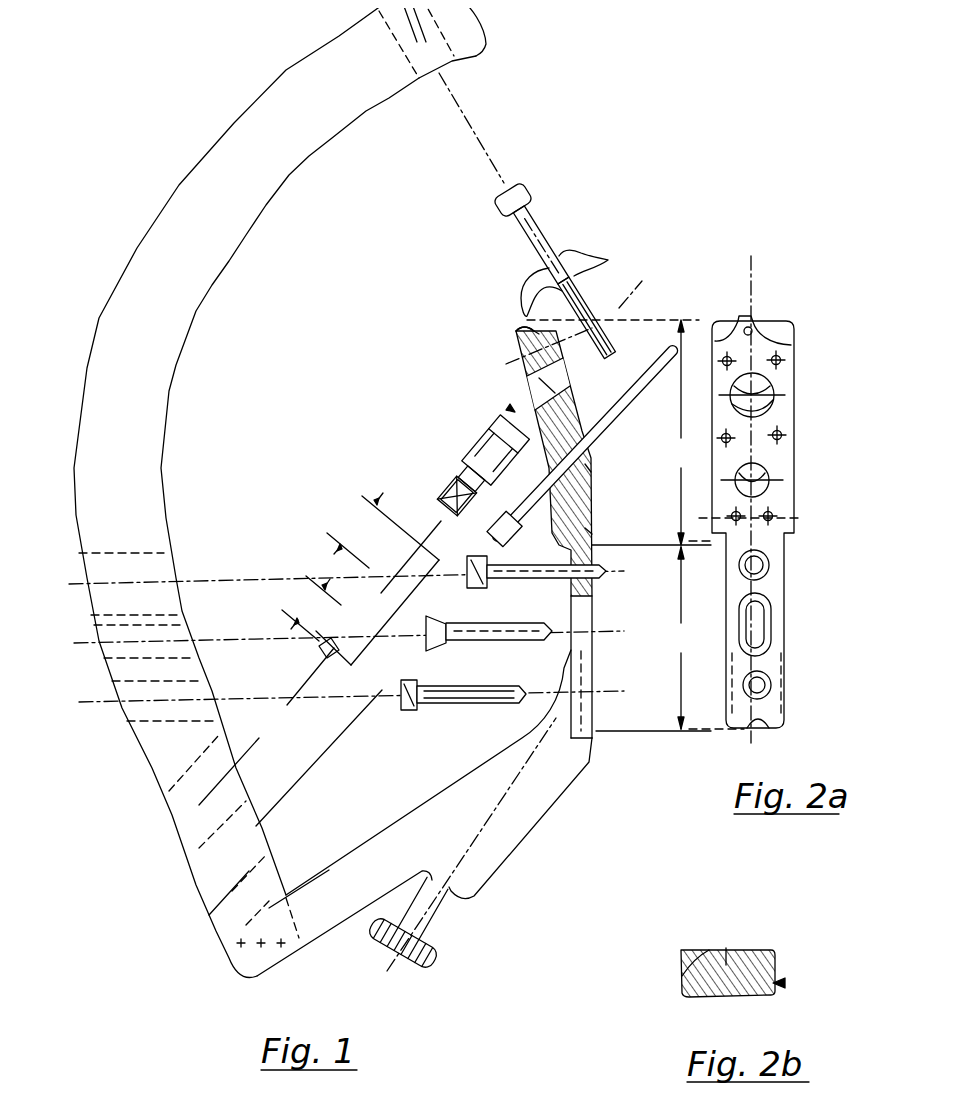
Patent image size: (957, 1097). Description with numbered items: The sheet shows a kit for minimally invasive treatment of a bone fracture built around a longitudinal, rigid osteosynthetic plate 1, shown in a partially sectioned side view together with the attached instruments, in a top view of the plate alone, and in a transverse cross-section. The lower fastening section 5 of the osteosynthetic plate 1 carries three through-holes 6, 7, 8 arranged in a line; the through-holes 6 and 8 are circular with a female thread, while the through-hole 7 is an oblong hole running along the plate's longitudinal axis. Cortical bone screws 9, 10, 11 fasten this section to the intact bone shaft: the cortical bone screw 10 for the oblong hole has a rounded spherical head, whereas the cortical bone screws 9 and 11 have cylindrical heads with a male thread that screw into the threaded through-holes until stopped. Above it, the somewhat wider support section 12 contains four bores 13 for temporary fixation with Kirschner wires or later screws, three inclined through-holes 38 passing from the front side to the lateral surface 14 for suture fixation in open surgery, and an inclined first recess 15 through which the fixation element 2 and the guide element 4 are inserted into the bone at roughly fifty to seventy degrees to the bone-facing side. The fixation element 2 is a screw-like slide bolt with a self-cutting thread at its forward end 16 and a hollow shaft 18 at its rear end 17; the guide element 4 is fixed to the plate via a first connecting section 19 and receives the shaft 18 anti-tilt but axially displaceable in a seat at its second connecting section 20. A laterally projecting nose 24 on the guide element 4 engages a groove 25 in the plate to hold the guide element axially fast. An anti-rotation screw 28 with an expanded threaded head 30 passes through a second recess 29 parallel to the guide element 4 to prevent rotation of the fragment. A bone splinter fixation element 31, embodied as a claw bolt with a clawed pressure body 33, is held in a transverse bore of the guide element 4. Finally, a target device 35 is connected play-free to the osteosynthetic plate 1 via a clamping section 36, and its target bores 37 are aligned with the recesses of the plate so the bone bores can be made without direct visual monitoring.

In FIG. 1, the osteosynthetic plate 1 is at (590, 502).
In FIG. 2A, the osteosynthetic plate 1 is at (753, 524).
In FIG. 2B, the osteosynthetic plate 1 is at (727, 950).
In FIG. 1, the fixation element 2 is at (490, 450).
In FIG. 1, the guide element 4 is at (362, 598).
In FIG. 1, the fastening section 5 is at (653, 639).
In FIG. 2A, the through-hole 6 is at (767, 564).
In FIG. 2A, the through-hole 7 is at (768, 625).
In FIG. 2A, the through-hole 8 is at (771, 684).
In FIG. 1, the cortical bone screw 9 is at (607, 575).
In FIG. 1, the cortical bone screw 10 is at (543, 652).
In FIG. 1, the cortical bone screw 11 is at (473, 700).
In FIG. 1, the support section 12 is at (619, 432).
In FIG. 2A, the bores 13 is at (781, 362).
In FIG. 2B, the lateral surface 14 is at (786, 985).
In FIG. 1, the first recess 15 is at (520, 388).
In FIG. 2A, the first recess 15 is at (755, 382).
In FIG. 1, the forward end 16 is at (510, 410).
In FIG. 1, the rear end 17 is at (440, 512).
In FIG. 1, the shaft 18 is at (440, 506).
In FIG. 1, the first connecting section 19 is at (311, 608).
In FIG. 1, the second connecting section 20 is at (356, 530).
In FIG. 1, the nose 24 is at (337, 657).
In FIG. 2A, the groove 25 is at (768, 411).
In FIG. 1, the anti-rotation screw 28 is at (647, 362).
In FIG. 1, the second recess 29 is at (590, 470).
In FIG. 2A, the second recess 29 is at (767, 469).
In FIG. 1, the head 30 is at (590, 533).
In FIG. 1, the bone splinter fixation element 31 is at (528, 228).
In FIG. 1, the pressure body 33 is at (583, 258).
In FIG. 1, the target device 35 is at (135, 424).
In FIG. 1, the clamping section 36 is at (552, 782).
In FIG. 1, the target bores 37 is at (160, 568).
In FIG. 1, the through-holes 38 is at (517, 333).
In FIG. 2A, the through-holes 38 is at (755, 325).
In FIG. 2B, the through-holes 38 is at (682, 978).